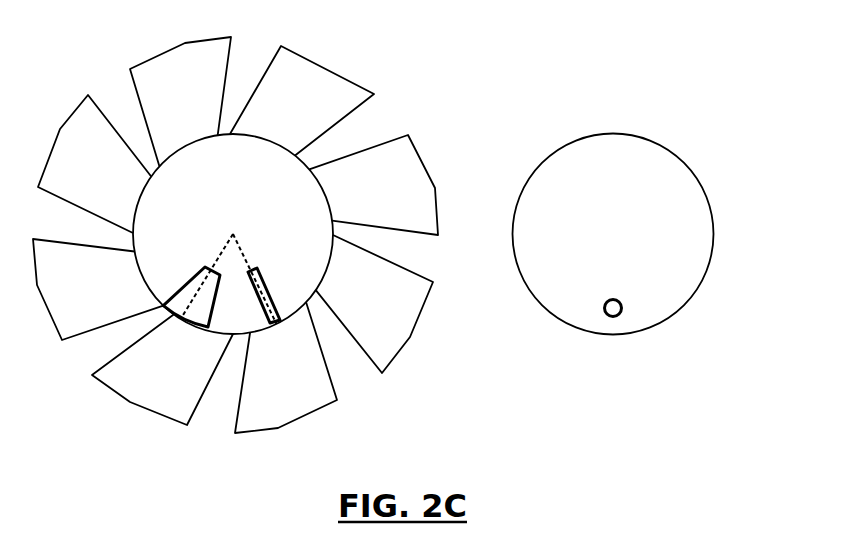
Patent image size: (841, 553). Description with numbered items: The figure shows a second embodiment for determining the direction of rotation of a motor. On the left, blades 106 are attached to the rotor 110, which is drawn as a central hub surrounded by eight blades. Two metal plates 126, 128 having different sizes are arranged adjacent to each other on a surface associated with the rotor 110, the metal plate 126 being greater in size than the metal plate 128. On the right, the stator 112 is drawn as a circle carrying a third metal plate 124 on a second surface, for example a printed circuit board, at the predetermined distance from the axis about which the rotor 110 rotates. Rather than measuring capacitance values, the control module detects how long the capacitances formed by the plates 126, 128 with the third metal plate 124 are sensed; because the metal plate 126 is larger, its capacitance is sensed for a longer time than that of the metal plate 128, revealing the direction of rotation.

The blades 106 is at (315, 57).
The rotor 110 is at (288, 167).
The stator 112 is at (691, 170).
The third metal plate 124 is at (621, 307).
The metal plate 126 is at (205, 267).
The metal plate 128 is at (282, 282).